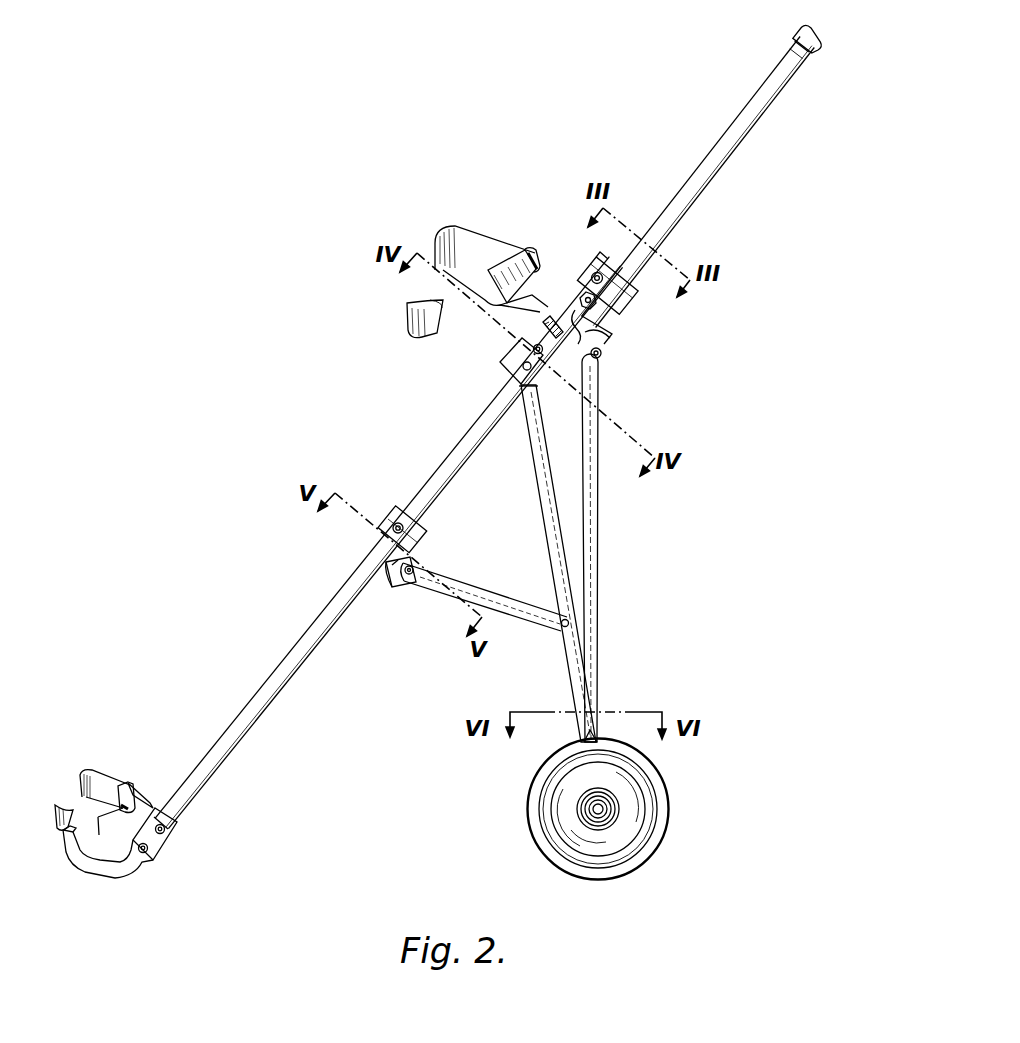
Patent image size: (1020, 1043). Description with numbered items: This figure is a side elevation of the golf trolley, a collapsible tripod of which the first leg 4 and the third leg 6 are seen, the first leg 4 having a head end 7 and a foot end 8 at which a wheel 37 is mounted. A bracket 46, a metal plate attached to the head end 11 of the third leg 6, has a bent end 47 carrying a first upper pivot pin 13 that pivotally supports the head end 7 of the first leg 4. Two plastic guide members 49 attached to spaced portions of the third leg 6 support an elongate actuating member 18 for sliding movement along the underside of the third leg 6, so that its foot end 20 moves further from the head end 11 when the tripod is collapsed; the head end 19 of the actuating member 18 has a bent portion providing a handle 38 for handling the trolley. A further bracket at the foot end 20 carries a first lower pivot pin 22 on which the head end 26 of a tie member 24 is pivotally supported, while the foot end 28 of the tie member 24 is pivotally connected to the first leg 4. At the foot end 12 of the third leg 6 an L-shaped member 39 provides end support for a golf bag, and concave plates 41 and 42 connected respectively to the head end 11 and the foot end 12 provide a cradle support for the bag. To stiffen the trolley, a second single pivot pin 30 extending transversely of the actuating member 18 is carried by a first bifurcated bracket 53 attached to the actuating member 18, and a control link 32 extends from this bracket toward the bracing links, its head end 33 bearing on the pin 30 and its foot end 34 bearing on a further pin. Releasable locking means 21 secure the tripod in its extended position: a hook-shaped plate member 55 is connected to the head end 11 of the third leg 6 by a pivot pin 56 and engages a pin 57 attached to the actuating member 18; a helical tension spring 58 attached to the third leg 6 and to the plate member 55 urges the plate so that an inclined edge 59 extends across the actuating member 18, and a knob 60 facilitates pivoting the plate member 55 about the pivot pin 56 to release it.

The first leg 4 is at (548, 509).
The third leg 6 is at (320, 617).
The head end of the first leg 7 is at (542, 389).
The foot end of the first leg 8 is at (550, 737).
The head end of the third leg 11 is at (603, 258).
The foot end of the third leg 12 is at (178, 822).
The first upper pivot pin 13 is at (512, 360).
The actuating member 18 is at (705, 210).
The head end of the actuating member 19 is at (782, 62).
The foot end of the actuating member 20 is at (388, 565).
The releasable locking means 21 is at (536, 314).
The first lower pivot pin 22 is at (405, 578).
The tie member 24 is at (488, 597).
The head end of the tie member 26 is at (412, 585).
The foot end of the tie member 28 is at (561, 628).
The second single pivot pin 30 is at (605, 360).
The control link 32 is at (600, 487).
The head end of the control link 33 is at (606, 372).
The foot end of the control link 34 is at (597, 692).
The wheel 37 is at (528, 820).
The handle 38 is at (795, 33).
The L-shaped member 39 is at (115, 872).
The concave plate 41 is at (508, 255).
The concave plate 42 is at (138, 781).
The bracket 46 is at (532, 350).
The bent end of the bracket 47 is at (522, 372).
The guide member 49 is at (630, 290).
The first bifurcated bracket 53 is at (605, 352).
The hook-shaped plate member 55 is at (567, 305).
The pivot pin 56 is at (560, 290).
The pin 57 is at (605, 332).
The helical tension spring 58 is at (553, 325).
The inclined edge 59 is at (570, 384).
The knob 60 is at (600, 303).